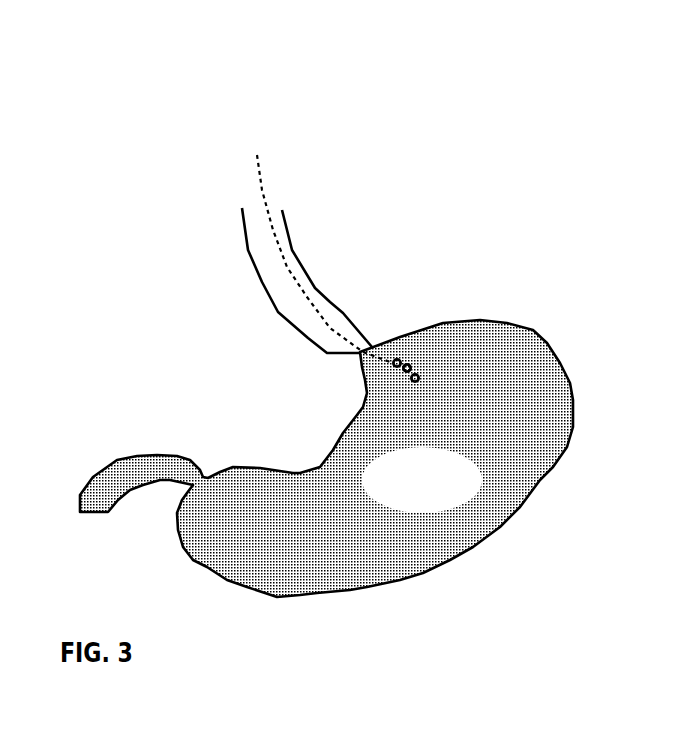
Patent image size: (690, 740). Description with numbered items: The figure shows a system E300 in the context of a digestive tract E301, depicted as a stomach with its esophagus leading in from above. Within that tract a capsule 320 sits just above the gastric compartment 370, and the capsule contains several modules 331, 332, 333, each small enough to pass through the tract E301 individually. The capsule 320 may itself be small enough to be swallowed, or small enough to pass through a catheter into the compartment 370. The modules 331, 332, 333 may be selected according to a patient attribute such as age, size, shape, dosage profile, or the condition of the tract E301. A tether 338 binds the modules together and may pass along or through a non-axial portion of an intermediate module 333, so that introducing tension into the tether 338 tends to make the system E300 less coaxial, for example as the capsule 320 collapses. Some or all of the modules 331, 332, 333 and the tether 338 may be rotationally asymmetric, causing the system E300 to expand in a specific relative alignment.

The tract E301 is at (607, 165).
The system E300 is at (482, 207).
The capsule 320 is at (316, 239).
The module 331 is at (397, 366).
The module 332 is at (415, 377).
The intermediate module 333 is at (407, 365).
The tether 338 is at (412, 368).
The gastric compartment 370 is at (447, 494).